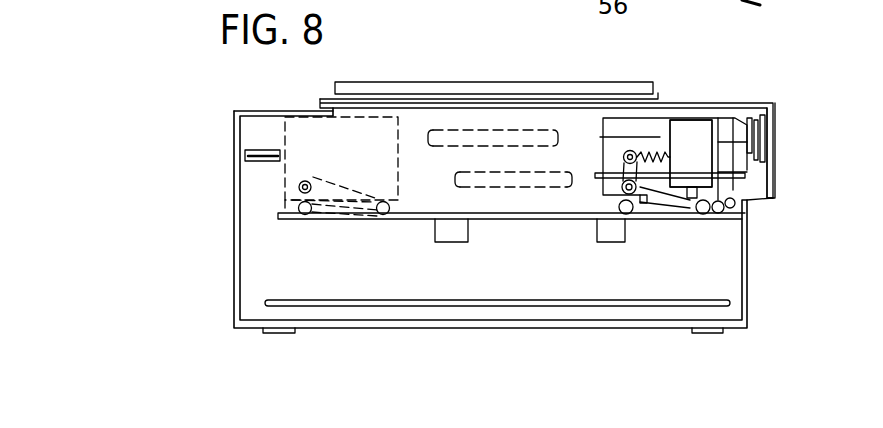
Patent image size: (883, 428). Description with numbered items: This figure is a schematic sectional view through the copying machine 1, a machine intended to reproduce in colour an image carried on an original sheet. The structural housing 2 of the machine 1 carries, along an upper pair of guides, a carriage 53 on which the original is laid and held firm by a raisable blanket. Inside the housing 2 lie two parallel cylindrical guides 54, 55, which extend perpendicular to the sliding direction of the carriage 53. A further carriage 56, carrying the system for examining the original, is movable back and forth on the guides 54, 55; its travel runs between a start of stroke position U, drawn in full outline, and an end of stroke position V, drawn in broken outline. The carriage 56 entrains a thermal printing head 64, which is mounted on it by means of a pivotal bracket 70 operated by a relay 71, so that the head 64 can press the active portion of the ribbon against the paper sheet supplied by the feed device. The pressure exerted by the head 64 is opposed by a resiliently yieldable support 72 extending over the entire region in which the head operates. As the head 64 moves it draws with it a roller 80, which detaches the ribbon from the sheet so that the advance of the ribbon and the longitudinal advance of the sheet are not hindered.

The copying machine 1 is at (218, 108).
The housing 2 is at (237, 277).
The end of stroke position V is at (285, 170).
The start of stroke position U is at (698, 122).
The carriage 53 is at (406, 87).
The cylindrical guide 54 is at (528, 188).
The cylindrical guide 55 is at (448, 147).
The carriage 56 is at (737, 170).
The thermal printing head 64 is at (657, 210).
The pivotal bracket 70 is at (607, 170).
The relay 71 is at (770, 150).
The resiliently yieldable support 72 is at (558, 220).
The roller 80 is at (703, 215).